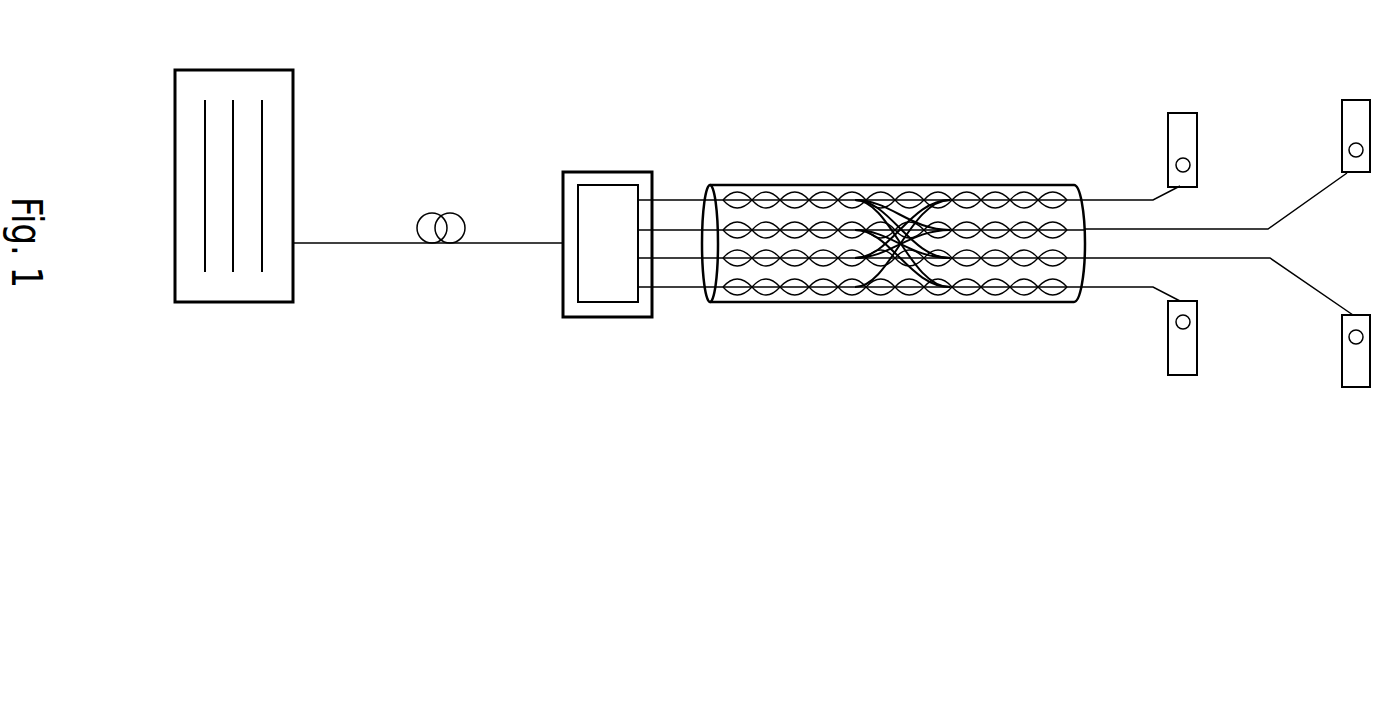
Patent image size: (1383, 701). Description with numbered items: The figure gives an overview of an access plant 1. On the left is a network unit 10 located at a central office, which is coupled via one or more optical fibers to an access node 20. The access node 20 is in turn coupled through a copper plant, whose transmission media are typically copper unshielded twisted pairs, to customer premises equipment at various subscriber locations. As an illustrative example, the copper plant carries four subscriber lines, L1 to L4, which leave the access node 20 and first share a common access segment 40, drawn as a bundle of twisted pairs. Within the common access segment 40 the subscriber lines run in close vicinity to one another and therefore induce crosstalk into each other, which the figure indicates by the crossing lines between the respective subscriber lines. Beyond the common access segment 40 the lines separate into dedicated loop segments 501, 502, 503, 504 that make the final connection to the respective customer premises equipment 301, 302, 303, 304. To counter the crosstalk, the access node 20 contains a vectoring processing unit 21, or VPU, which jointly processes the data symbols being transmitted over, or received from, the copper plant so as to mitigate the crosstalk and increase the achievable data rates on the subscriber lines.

The access plant 1 is at (1144, 563).
The network unit 10 is at (173, 70).
The access node 20 is at (563, 172).
The vectoring processing unit 21 is at (608, 302).
The common access segment 40 is at (896, 302).
The customer premises equipment 301 is at (1183, 113).
The customer premises equipment 302 is at (1352, 100).
The customer premises equipment 303 is at (1352, 387).
The customer premises equipment 304 is at (1183, 375).
The dedicated loop segment 501 is at (1122, 200).
The dedicated loop segment 502 is at (1237, 229).
The dedicated loop segment 503 is at (1237, 258).
The dedicated loop segment 504 is at (1122, 287).